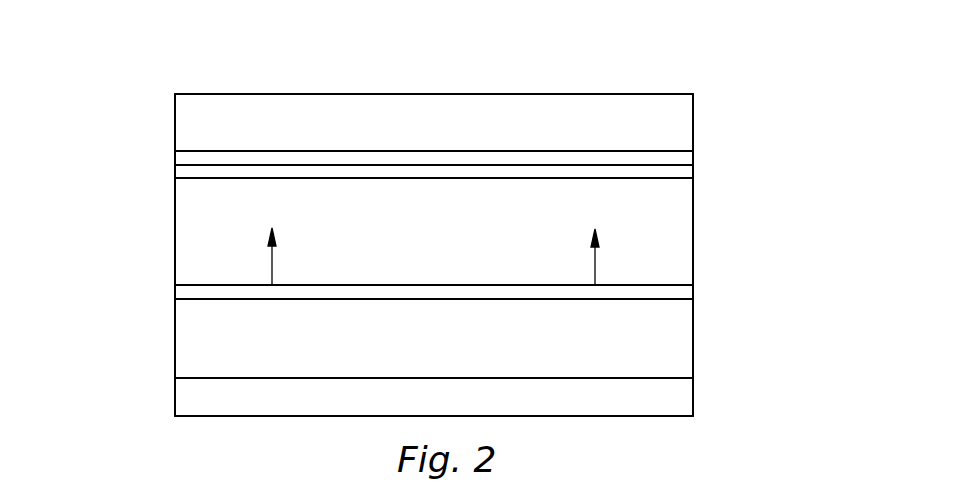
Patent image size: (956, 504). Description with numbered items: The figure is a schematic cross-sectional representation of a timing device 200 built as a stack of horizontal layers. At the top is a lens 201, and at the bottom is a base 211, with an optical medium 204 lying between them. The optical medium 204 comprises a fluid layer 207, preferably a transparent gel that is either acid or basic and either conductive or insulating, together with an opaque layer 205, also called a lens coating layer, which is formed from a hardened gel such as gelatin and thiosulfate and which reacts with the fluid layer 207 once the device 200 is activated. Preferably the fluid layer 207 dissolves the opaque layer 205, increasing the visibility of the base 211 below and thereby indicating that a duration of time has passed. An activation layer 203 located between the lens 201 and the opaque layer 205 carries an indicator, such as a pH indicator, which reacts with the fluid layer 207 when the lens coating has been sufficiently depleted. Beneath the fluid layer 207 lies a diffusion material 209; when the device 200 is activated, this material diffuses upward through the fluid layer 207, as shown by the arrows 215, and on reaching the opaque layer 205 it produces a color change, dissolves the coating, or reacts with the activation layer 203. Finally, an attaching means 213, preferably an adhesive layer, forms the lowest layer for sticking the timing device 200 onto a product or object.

The timing device 200 is at (148, 70).
The lens 201 is at (693, 108).
The activation layer 203 is at (693, 160).
The optical medium 204 is at (157, 150).
The opaque layer 205 is at (693, 174).
The fluid layer 207 is at (693, 240).
The diffusion material 209 is at (693, 292).
The base 211 is at (693, 332).
The attaching means 213 is at (693, 396).
The arrows 215 is at (272, 263).